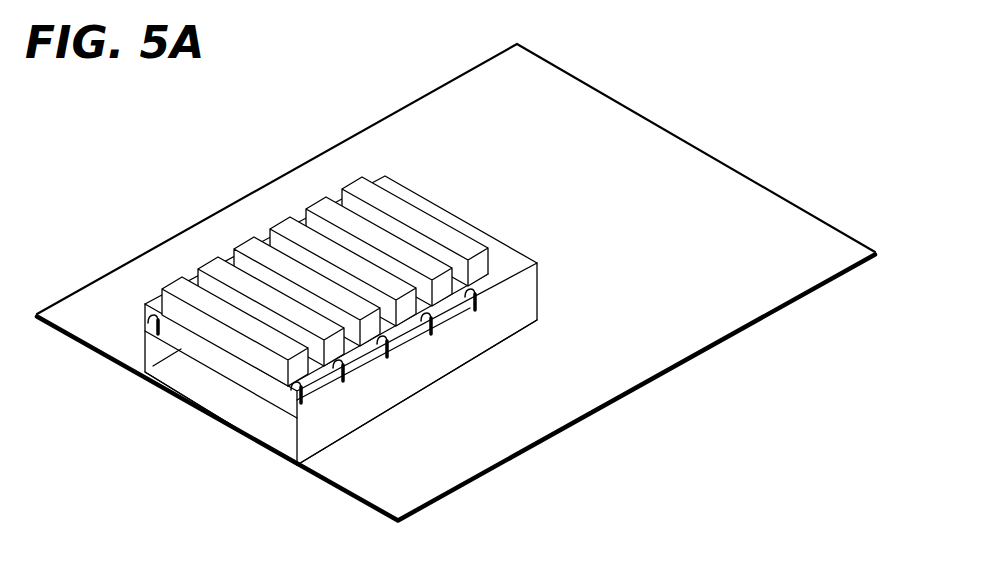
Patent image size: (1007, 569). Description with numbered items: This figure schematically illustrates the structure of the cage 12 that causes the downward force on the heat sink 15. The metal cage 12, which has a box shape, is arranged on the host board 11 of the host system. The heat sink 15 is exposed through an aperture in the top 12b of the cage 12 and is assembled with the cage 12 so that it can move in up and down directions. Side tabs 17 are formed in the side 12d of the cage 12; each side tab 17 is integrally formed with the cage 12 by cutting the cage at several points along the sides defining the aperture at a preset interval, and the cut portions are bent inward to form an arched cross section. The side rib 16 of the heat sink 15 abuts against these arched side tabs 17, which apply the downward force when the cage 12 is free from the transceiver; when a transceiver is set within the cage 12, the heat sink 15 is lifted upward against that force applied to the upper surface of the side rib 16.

The host board 11 is at (673, 160).
The cage 12 is at (388, 290).
The top 12b is at (470, 240).
The side 12d is at (510, 319).
The heat sink 15 is at (372, 183).
The side rib 16 is at (270, 423).
The side tab 17 is at (384, 360).